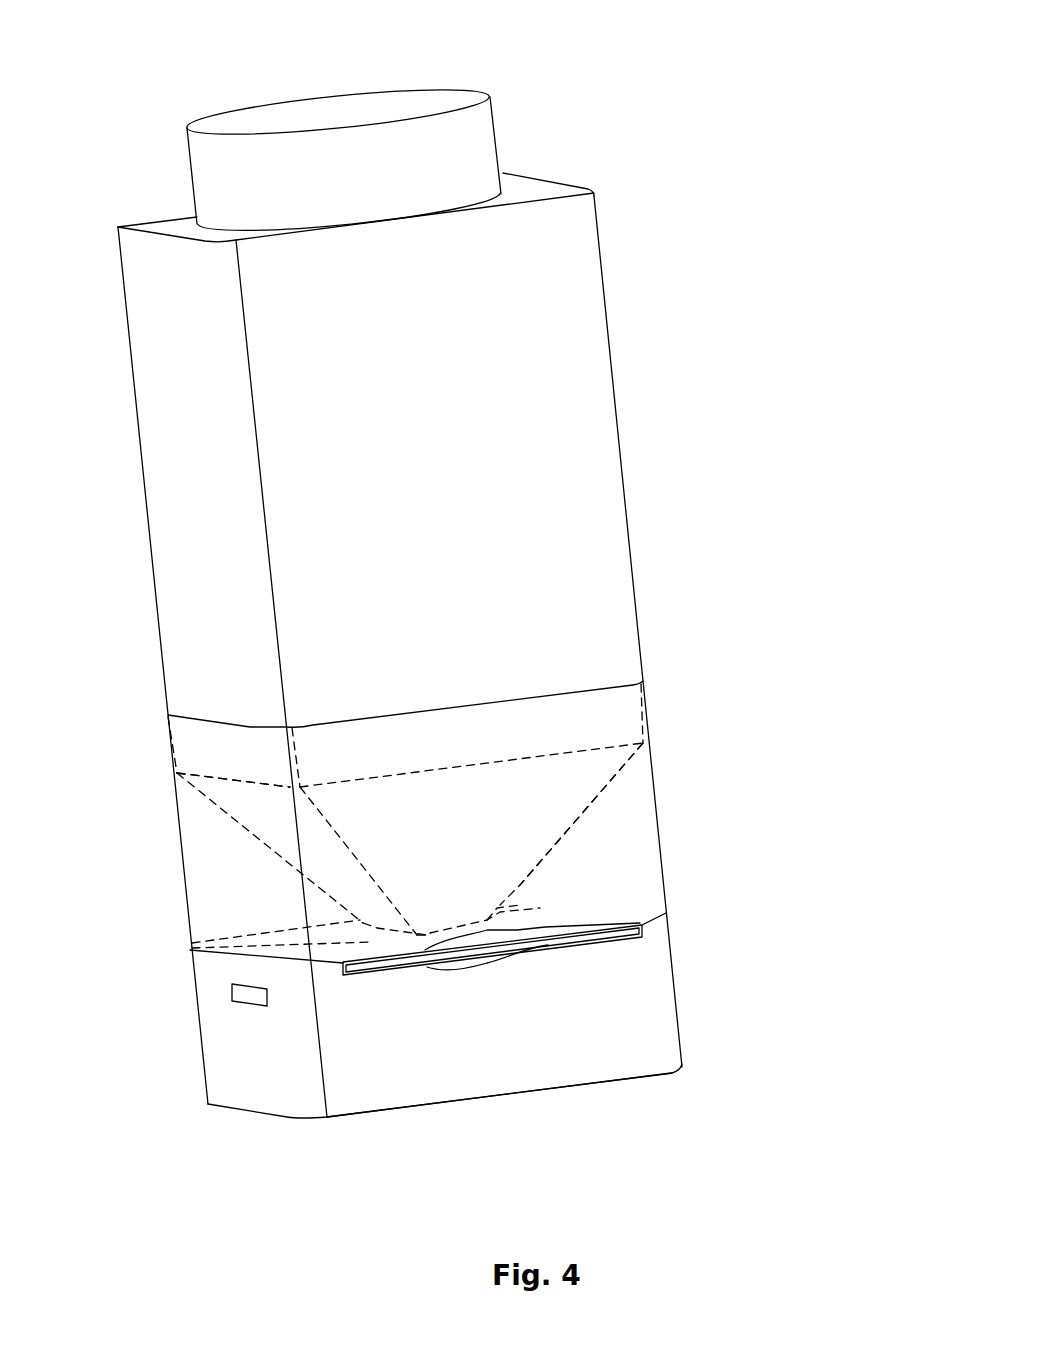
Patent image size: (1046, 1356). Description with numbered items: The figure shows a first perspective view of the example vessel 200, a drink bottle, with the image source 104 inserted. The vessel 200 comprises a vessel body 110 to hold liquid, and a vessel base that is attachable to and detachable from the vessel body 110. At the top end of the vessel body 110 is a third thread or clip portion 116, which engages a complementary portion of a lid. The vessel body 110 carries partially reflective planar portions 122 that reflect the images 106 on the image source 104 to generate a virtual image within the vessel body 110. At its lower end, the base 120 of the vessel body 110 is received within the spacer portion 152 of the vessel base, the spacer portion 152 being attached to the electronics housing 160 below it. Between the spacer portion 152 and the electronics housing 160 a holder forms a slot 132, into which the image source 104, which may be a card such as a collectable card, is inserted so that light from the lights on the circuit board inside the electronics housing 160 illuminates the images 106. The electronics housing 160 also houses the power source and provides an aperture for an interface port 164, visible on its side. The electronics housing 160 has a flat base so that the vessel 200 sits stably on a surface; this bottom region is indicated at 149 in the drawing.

The vessel 200 is at (451, 615).
The third thread or clip portion 116 is at (208, 177).
The vessel body 110 is at (612, 370).
The base of the vessel body 120 is at (625, 810).
The partially reflective planar portions 122 is at (277, 815).
The spacer portion 152 is at (658, 827).
The image source 104 is at (585, 917).
The images 106 is at (297, 943).
The slot 132 is at (648, 932).
The electronics housing 160 is at (680, 982).
The interface port 164 is at (232, 998).
The bottom surface 149 is at (463, 1107).